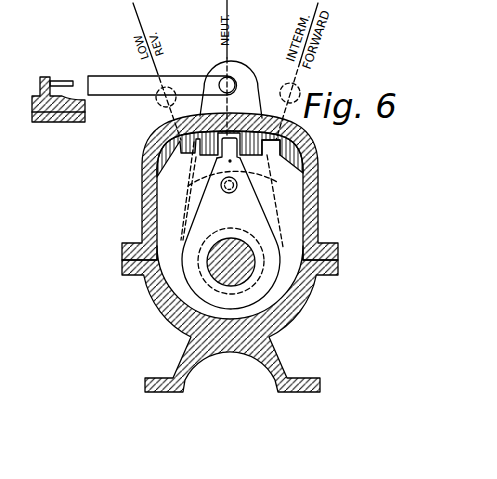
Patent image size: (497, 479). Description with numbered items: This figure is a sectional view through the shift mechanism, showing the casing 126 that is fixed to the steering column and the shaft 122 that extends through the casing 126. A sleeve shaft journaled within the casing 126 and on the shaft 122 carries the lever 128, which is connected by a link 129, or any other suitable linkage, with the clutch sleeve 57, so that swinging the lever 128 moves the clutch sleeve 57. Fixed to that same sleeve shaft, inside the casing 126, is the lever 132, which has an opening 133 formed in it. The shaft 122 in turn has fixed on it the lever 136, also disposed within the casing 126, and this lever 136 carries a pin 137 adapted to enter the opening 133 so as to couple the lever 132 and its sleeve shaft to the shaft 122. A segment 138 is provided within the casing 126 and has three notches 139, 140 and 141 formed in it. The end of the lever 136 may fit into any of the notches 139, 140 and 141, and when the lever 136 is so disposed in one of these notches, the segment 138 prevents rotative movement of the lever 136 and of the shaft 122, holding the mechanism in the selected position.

The clutch sleeve 57 is at (53, 122).
The shaft 122 is at (236, 283).
The casing 126 is at (172, 132).
The lever 128 is at (238, 70).
The link 129 is at (73, 82).
The lever 132 is at (192, 181).
The opening 133 is at (192, 197).
The lever 136 is at (258, 225).
The pin 137 is at (229, 194).
The segment 138 is at (306, 171).
The notch 139 is at (182, 153).
The notch 140 is at (228, 136).
The notch 141 is at (278, 152).